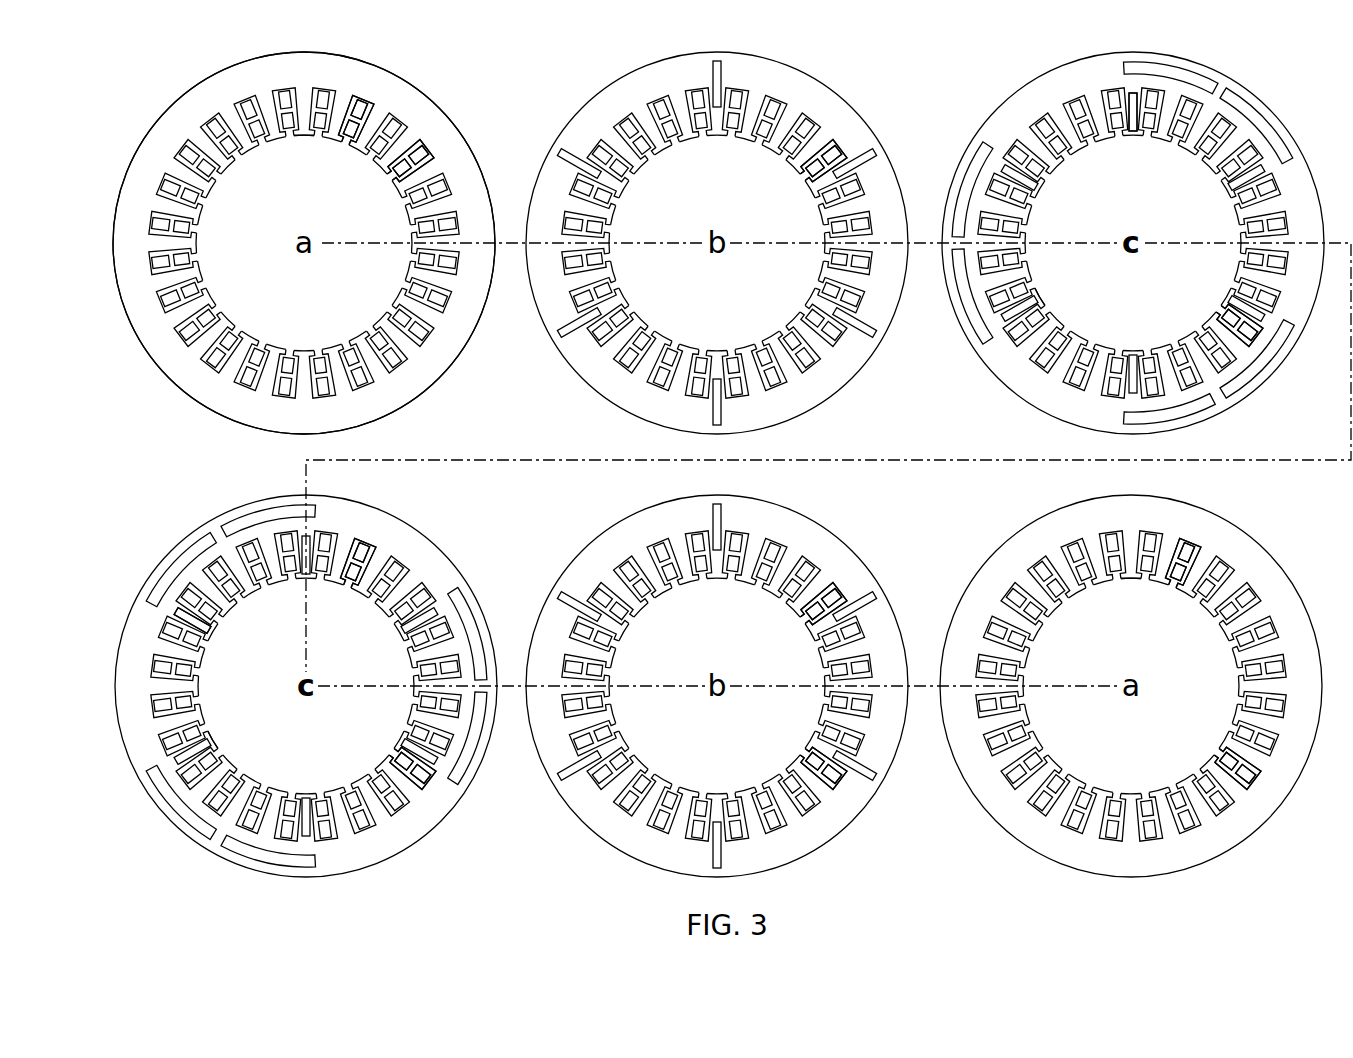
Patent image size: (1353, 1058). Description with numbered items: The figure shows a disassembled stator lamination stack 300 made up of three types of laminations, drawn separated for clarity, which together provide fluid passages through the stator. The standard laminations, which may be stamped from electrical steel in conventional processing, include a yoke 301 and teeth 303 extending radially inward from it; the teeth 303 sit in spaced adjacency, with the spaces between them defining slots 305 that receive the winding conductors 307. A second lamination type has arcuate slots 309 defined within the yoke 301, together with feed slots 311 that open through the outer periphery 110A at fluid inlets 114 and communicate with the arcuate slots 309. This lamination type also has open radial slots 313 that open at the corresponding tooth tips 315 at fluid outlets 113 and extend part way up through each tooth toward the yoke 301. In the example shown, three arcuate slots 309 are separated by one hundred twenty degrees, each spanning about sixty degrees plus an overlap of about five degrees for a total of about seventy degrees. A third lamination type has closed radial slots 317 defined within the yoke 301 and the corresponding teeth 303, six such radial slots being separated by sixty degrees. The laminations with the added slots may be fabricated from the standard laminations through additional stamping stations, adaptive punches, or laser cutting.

The stator lamination stack 300 is at (163, 43).
The yoke 301 is at (309, 60).
The teeth 303 is at (305, 128).
The slots 305 is at (396, 172).
The winding conductors 307 is at (363, 103).
The arcuate slots 309 is at (1160, 57).
The feed slots 311 is at (1222, 82).
The open radial slots 313 is at (1133, 132).
The tooth tips 315 is at (1123, 130).
The closed radial slots 317 is at (712, 74).
The outer periphery 110A is at (437, 100).
The fluid outlets 113 is at (1035, 298).
The fluid inlets 114 is at (1227, 408).